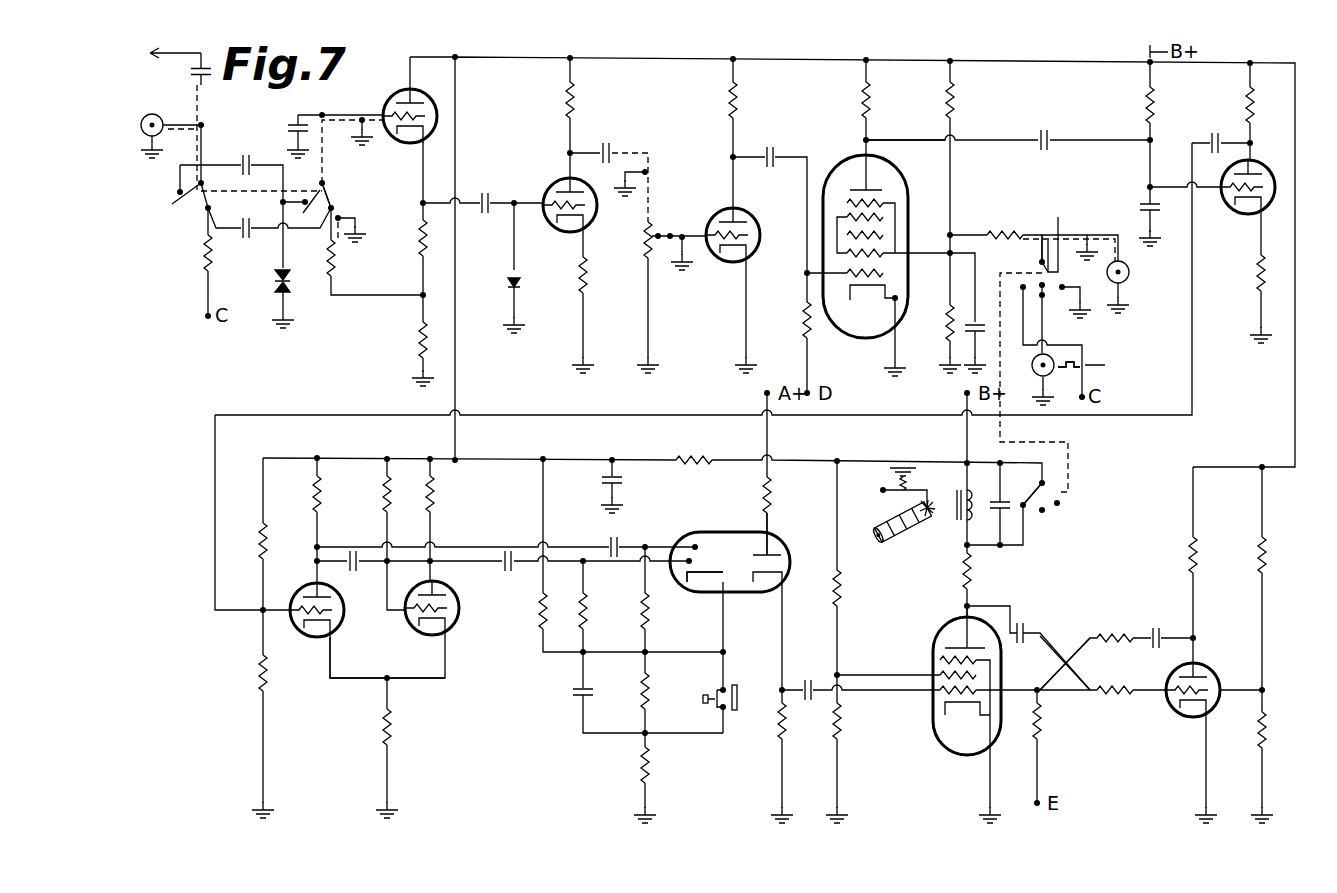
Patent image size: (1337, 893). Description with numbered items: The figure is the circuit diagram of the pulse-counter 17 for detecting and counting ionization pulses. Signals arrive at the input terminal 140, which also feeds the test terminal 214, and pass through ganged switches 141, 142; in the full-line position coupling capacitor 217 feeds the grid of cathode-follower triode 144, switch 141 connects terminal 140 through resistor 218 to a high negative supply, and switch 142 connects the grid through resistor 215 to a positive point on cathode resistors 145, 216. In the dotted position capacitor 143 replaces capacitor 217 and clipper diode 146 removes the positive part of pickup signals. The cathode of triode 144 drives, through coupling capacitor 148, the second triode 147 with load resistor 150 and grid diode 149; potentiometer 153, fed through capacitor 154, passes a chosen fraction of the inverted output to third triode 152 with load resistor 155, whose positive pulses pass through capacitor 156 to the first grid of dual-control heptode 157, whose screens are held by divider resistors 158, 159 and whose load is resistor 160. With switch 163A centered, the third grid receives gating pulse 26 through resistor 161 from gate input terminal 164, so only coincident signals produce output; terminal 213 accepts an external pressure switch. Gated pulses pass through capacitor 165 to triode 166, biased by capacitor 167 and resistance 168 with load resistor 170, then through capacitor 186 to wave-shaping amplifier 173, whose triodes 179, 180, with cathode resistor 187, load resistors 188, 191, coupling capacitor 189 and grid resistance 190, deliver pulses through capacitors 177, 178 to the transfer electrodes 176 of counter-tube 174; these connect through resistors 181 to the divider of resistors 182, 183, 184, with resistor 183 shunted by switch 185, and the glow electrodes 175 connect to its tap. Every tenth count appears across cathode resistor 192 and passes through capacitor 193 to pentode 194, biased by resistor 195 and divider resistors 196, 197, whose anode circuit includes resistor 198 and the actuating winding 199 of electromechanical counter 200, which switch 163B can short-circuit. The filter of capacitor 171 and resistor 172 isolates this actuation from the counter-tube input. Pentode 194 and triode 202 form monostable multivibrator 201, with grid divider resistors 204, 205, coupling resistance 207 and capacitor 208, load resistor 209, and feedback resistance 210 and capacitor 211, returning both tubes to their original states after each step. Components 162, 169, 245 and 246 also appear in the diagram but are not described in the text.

The pulse-counter 17 is at (1022, 122).
The gating pulse 26 is at (1085, 365).
The signal input terminal 140 is at (143, 136).
The switch 141 is at (200, 195).
The switch 142 is at (327, 193).
The grid-coupling capacitor 143 is at (245, 153).
The triode 144 is at (391, 101).
The cathode resistance 145 is at (415, 346).
The clipper diode 146 is at (277, 280).
The second triode 147 is at (597, 212).
The coupling capacitor 148 is at (485, 192).
The diode 149 is at (507, 283).
The load resistor 150 is at (565, 105).
The third triode 152 is at (717, 216).
The potentiometer 153 is at (650, 245).
The capacitor 154 is at (610, 150).
The load resistor 155 is at (729, 108).
The capacitor 156 is at (770, 144).
The dual-control heptode 157 is at (843, 166).
The resistor 158 is at (955, 102).
The resistor 159 is at (945, 313).
The load resistor 160 is at (862, 102).
The resistor 161 is at (1003, 228).
The resistor 162 is at (803, 325).
The switch 163A is at (1058, 235).
The switch 163B is at (1055, 516).
The gate input terminal 164 is at (1052, 358).
The capacitor 165 is at (1049, 132).
The triode 166 is at (1235, 210).
The capacitor 167 is at (1145, 202).
The high resistance 168 is at (1145, 106).
The cathode resistor 169 is at (1252, 277).
The load resistor 170 is at (1245, 110).
The capacitor 171 is at (624, 481).
The resistor 172 is at (695, 446).
The wave-shaping amplifier 173 is at (408, 671).
The counter-tube 174 is at (781, 534).
The glow electrodes 175 is at (715, 574).
The transfer electrodes 176 is at (700, 544).
The capacitor 177 is at (609, 540).
The capacitor 178 is at (509, 548).
The triode 179 is at (310, 634).
The triode 180 is at (458, 620).
The resistor 181 is at (648, 598).
The resistor 182 is at (540, 603).
The intermediate resistor 183 is at (640, 684).
The resistor 184 is at (641, 772).
The switch 185 is at (727, 712).
The capacitor 186 is at (1212, 135).
The resistor 187 is at (395, 733).
The load resistor 188 is at (313, 500).
The capacitor 189 is at (354, 574).
The high resistance 190 is at (383, 492).
The load resistor 191 is at (435, 493).
The cathode resistor 192 is at (790, 733).
The coupling capacitor 193 is at (804, 680).
The pentode tube 194 is at (933, 633).
The resistor 195 is at (1044, 730).
The resistor 196 is at (843, 586).
The resistor 197 is at (843, 723).
The resistor 198 is at (976, 574).
The actuating winding 199 is at (958, 512).
The electromechanical counter 200 is at (886, 519).
The monostable multivibrator circuit 201 is at (1086, 637).
The triode 202 is at (1208, 667).
The resistor 204 is at (1297, 531).
The resistor 205 is at (1274, 728).
The resistance 207 is at (1108, 698).
The capacitor 208 is at (1027, 628).
The load resistor 209 is at (1188, 556).
The resistance 210 is at (1119, 655).
The capacitor 211 is at (1157, 628).
The terminal 213 is at (1130, 276).
The test terminal 214 is at (180, 55).
The resistor 215 is at (340, 258).
The resistor 216 is at (420, 246).
The coupling capacitor 217 is at (240, 238).
The resistor 218 is at (204, 260).
The resistor 245 is at (258, 543).
The resistor 246 is at (270, 676).